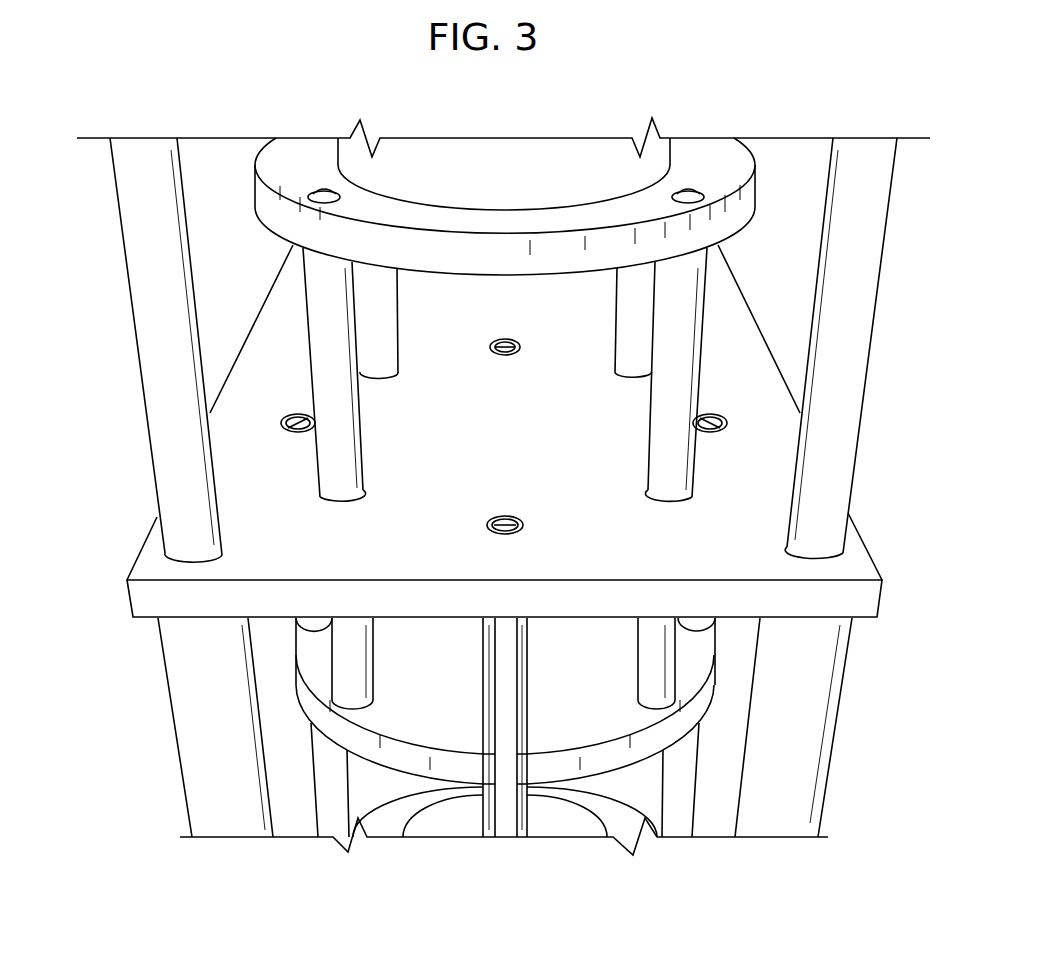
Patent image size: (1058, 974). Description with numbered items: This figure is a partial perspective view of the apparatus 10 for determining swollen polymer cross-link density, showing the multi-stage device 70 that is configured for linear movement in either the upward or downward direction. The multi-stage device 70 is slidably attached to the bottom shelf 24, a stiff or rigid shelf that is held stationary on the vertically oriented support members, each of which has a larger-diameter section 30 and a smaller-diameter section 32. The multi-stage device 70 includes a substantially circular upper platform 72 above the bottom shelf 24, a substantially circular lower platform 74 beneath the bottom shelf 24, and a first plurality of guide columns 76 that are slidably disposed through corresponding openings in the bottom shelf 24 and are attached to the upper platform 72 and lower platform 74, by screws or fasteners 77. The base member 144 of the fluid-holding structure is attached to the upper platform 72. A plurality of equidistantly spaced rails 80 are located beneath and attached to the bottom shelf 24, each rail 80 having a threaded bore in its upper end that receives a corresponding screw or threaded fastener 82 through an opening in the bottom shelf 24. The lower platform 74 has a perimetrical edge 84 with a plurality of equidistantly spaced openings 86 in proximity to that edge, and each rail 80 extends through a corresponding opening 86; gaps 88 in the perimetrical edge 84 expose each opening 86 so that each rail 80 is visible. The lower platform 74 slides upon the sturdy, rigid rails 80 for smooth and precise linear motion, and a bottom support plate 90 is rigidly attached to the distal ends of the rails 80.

The apparatus 10 is at (55, 98).
The bottom shelf 24 is at (145, 590).
The section 30 is at (195, 763).
The section 32 is at (140, 340).
The multi-stage device 70 is at (280, 150).
The upper platform 72 is at (257, 212).
The lower platform 74 is at (597, 770).
The guide columns 76 is at (315, 307).
The screws or fasteners 77 is at (330, 190).
The rails 80 is at (303, 797).
The screw or threaded fastener 82 is at (290, 425).
The perimetrical edge 84 is at (417, 765).
The openings 86 is at (482, 750).
The gaps 88 is at (515, 815).
The bottom support plate 90 is at (550, 823).
The base member 144 is at (590, 157).